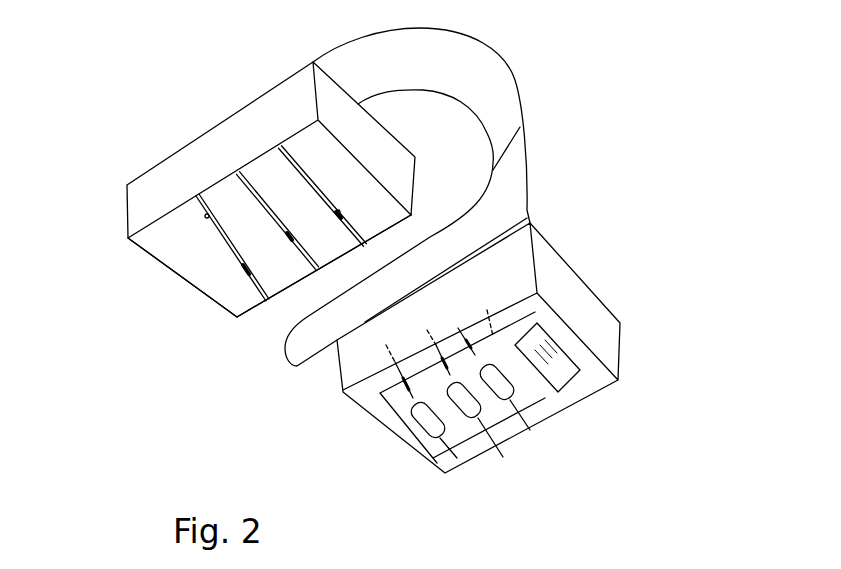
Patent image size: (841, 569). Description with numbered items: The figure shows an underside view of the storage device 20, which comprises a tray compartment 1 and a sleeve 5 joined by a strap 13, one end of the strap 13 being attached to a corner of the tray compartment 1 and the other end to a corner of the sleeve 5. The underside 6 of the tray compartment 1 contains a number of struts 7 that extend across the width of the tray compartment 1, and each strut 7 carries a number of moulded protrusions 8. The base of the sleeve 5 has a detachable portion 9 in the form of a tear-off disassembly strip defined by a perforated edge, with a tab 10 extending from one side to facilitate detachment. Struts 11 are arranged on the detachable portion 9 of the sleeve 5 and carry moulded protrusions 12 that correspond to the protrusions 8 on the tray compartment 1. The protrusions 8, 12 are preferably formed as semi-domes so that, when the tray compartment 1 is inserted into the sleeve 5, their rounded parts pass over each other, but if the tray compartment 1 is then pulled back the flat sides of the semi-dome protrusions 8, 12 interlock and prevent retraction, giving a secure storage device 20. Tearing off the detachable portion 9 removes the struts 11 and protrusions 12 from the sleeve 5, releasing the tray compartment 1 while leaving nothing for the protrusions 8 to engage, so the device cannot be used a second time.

The tray compartment 1 is at (140, 250).
The sleeve 5 is at (587, 283).
The underside 6 is at (203, 260).
The struts 7 is at (357, 250).
The moulded protrusions 8 is at (297, 168).
The detachable portion 9 is at (540, 400).
The tab 10 is at (560, 362).
The struts 11 is at (463, 462).
The moulded protrusions 12 is at (545, 410).
The strap 13 is at (490, 83).
The storage device 20 is at (631, 137).